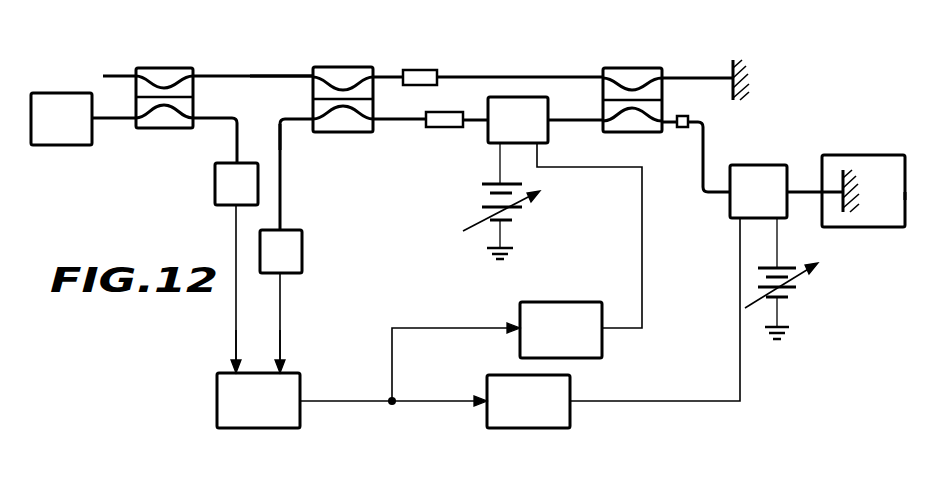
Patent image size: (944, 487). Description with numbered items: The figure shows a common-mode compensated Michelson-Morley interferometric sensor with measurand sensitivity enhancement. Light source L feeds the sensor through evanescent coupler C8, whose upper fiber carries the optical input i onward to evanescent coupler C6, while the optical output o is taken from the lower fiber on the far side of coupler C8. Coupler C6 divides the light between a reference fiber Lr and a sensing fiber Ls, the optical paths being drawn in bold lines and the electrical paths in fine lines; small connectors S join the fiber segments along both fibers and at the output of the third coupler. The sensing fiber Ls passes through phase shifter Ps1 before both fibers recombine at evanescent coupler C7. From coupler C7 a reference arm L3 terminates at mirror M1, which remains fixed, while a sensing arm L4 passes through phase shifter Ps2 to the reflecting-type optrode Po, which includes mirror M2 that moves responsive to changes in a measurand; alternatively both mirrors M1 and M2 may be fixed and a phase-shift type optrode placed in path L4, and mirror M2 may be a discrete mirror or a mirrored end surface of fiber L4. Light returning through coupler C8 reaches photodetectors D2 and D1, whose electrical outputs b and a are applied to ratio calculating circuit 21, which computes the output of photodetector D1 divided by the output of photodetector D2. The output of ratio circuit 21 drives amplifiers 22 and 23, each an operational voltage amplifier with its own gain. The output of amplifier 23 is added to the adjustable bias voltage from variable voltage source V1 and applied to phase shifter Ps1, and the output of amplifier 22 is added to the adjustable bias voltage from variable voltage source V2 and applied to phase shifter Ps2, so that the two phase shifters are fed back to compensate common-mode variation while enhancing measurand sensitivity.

The light source L is at (61, 119).
The evanescent coupler C8 is at (163, 67).
The evanescent coupler C6 is at (345, 66).
The evanescent coupler C7 is at (634, 67).
The connectors S is at (421, 70).
The reference fiber Lr is at (513, 76).
The sensing fiber Ls is at (411, 123).
The reference arm L3 is at (702, 76).
The sensing arm L4 is at (800, 190).
The fixed mirror M1 is at (762, 80).
The moveable mirror M2 is at (863, 191).
The phase shifter Ps1 is at (518, 120).
The phase shifter Ps2 is at (758, 191).
The variable voltage source V1 is at (476, 207).
The variable voltage source V2 is at (793, 297).
The photodetector D1 is at (281, 251).
The photodetector D2 is at (236, 184).
The optical input i is at (281, 66).
The optical output o is at (289, 122).
The output of photodetector D1 a is at (282, 350).
The output of photodetector D2 b is at (234, 350).
The ratio calculating circuit 21 is at (258, 429).
The amplifier 22 is at (572, 429).
The amplifier 23 is at (603, 345).
The reflecting-type optrode Po is at (868, 228).